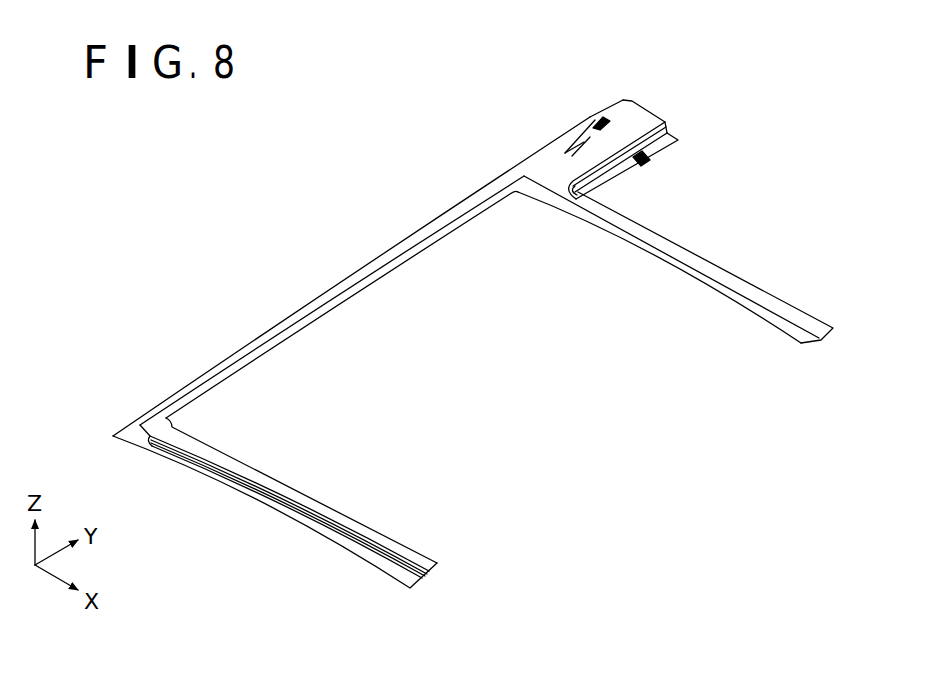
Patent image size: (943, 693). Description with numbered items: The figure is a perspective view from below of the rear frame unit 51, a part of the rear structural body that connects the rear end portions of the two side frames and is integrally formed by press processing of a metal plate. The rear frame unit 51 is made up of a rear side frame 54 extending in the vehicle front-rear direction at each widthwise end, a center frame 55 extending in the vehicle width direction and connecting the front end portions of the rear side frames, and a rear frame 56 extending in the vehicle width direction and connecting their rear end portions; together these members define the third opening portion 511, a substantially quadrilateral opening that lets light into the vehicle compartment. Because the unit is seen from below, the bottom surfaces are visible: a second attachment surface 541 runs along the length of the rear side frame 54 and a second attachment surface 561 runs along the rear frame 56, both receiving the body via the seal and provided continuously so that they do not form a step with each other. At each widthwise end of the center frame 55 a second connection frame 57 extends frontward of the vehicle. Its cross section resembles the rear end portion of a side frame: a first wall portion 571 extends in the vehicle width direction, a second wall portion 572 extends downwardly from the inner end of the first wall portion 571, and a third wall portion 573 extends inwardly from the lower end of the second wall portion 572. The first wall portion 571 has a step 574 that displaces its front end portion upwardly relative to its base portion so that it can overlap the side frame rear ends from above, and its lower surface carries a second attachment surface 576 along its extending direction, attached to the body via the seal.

The rear frame unit 51 is at (245, 176).
The third opening portion 511 is at (410, 266).
The rear side frame 54 is at (318, 311).
The second attachment surface 541 is at (252, 345).
The center frame 55 is at (728, 270).
The rear frame 56 is at (353, 520).
The second attachment surface 561 is at (260, 497).
The second connection frame 57 is at (647, 112).
The first wall portion 571 is at (634, 101).
The second wall portion 572 is at (667, 125).
The third wall portion 573 is at (662, 153).
The step 574 is at (582, 118).
The second attachment surface 576 is at (580, 128).